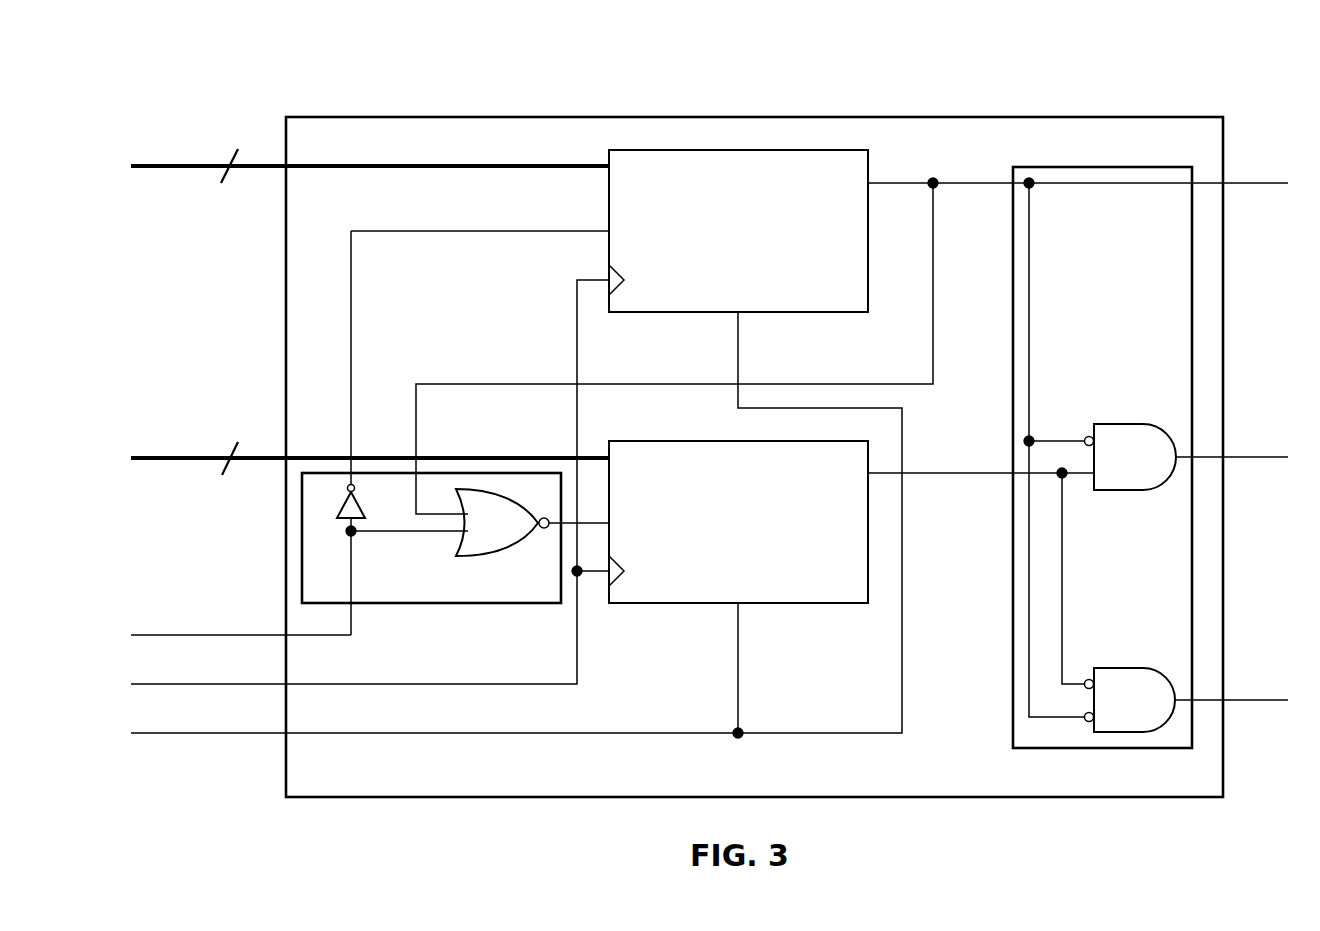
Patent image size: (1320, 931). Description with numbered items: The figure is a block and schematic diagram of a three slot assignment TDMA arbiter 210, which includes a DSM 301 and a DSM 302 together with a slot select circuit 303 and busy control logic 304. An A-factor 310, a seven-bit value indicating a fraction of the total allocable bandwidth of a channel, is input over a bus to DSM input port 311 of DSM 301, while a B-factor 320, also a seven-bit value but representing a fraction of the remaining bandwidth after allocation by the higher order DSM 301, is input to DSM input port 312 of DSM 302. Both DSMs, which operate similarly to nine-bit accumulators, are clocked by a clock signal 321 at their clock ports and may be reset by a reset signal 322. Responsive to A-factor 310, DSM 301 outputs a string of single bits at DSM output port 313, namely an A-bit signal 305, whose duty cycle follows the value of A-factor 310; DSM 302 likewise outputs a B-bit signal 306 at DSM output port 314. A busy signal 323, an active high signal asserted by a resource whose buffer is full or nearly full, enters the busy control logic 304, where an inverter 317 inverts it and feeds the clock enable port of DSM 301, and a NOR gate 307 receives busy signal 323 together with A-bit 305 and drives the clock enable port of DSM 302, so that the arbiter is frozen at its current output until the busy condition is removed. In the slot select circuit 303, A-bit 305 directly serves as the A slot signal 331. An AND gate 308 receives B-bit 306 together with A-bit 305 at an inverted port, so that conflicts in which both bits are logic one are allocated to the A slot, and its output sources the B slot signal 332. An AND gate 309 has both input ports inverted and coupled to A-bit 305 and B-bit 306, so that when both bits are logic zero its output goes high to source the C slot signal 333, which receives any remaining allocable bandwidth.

The TDMA arbiter 210 is at (1210, 74).
The DSM 301 is at (738, 231).
The DSM 302 is at (738, 522).
The slot select circuit 303 is at (1013, 308).
The busy control logic 304 is at (450, 604).
The A-bit signal 305 is at (960, 184).
The B-bit signal 306 is at (1013, 576).
The NOR gate 307 is at (532, 522).
The AND gate 308 is at (1131, 457).
The AND gate 309 is at (1130, 700).
The A-factor 310 is at (199, 167).
The DSM input port 311 is at (647, 177).
The DSM input port 312 is at (647, 468).
The DSM output port 313 is at (908, 177).
The DSM output port 314 is at (941, 468).
The inverter 317 is at (384, 502).
The B-factor 320 is at (199, 459).
The clock signal 321 is at (203, 685).
The reset signal 322 is at (203, 734).
The busy signal 323 is at (203, 636).
The A slot signal 331 is at (1257, 186).
The B slot signal 332 is at (1257, 460).
The C slot signal 333 is at (1257, 703).